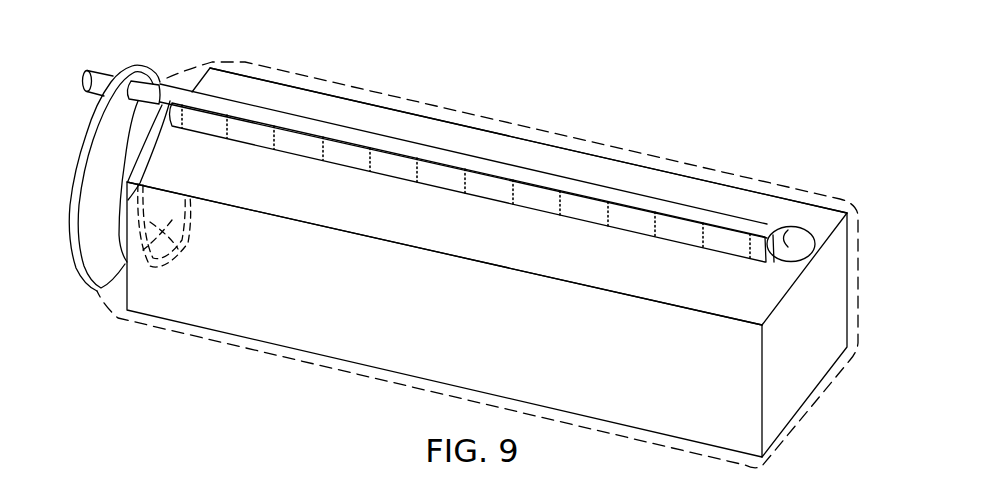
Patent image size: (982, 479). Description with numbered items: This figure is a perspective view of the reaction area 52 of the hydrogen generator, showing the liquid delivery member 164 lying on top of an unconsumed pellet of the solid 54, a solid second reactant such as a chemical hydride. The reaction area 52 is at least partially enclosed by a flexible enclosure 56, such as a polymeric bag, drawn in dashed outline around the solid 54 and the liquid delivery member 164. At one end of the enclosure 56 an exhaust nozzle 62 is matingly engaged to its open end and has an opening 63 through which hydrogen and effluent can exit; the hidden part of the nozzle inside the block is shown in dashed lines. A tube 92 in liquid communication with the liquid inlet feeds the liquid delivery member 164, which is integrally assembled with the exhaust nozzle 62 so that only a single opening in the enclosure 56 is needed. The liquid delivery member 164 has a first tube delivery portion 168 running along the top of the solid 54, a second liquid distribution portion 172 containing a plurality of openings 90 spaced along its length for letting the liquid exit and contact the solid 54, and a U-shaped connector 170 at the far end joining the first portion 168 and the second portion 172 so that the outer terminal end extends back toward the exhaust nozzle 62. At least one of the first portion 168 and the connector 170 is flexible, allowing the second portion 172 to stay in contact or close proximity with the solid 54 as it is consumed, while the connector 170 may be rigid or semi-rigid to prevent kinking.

The reaction area 52 is at (477, 256).
The solid 54 is at (607, 173).
The enclosure 56 is at (533, 130).
The exhaust nozzle 62 is at (73, 172).
The opening 63 is at (160, 240).
The openings 90 is at (418, 167).
The tube 92 is at (100, 74).
The liquid delivery member 164 is at (761, 214).
The first tube delivery portion 168 is at (261, 107).
The U-shaped connector 170 is at (778, 224).
The second liquid distribution portion 172 is at (712, 232).